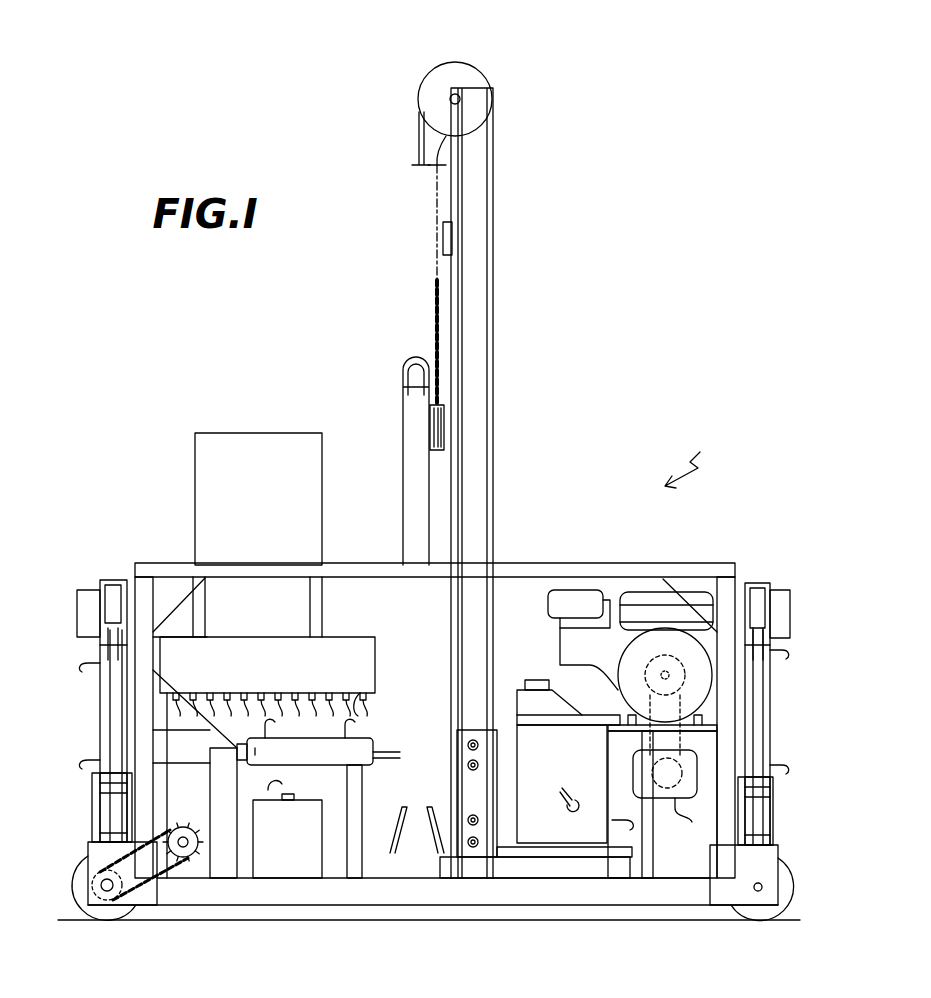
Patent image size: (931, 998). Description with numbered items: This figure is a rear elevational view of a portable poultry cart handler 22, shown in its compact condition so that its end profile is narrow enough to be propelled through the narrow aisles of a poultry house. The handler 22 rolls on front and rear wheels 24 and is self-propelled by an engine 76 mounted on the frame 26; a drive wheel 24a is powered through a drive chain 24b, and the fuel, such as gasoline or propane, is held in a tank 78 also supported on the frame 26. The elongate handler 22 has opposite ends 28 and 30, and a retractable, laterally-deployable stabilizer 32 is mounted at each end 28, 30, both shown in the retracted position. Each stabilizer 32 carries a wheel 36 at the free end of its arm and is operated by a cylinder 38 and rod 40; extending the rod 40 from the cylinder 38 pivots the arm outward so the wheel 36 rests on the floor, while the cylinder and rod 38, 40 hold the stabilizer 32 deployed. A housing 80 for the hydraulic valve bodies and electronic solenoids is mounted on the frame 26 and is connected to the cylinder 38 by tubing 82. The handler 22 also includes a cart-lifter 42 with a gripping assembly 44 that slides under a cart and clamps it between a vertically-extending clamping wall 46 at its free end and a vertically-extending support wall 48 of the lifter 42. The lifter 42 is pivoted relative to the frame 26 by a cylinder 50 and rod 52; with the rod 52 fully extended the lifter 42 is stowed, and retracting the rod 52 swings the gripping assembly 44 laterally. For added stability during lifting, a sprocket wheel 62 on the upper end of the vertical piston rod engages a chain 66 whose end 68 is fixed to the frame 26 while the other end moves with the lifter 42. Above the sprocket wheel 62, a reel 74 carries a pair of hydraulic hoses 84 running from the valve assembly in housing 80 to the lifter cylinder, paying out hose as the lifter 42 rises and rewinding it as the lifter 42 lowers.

The handler 22 is at (701, 452).
The reel 74 is at (468, 70).
The hydraulic hoses 84 is at (422, 130).
The sprocket wheel 62 is at (436, 165).
The chain link 66 is at (437, 318).
The end of chain 68 is at (430, 427).
The engine 76 is at (590, 625).
The tank 78 is at (527, 703).
The support wall 48 is at (500, 838).
The cart-lifter 42 is at (476, 880).
The gripping assembly 44 is at (565, 880).
The clamping wall 46 is at (646, 880).
The housing 80 is at (246, 688).
The tubing 82 is at (95, 762).
The stabilizer 32 is at (113, 588).
The wheel 36 is at (83, 595).
The rod 40 is at (110, 630).
The cylinder 38 is at (105, 705).
The end 30 is at (778, 852).
The wheels 24 is at (88, 862).
The drive wheel 24a is at (108, 918).
The drive chain 24b is at (168, 868).
The end 28 is at (88, 898).
The frame 26 is at (300, 905).
The cylinder 50 is at (322, 770).
The rod 52 is at (400, 765).